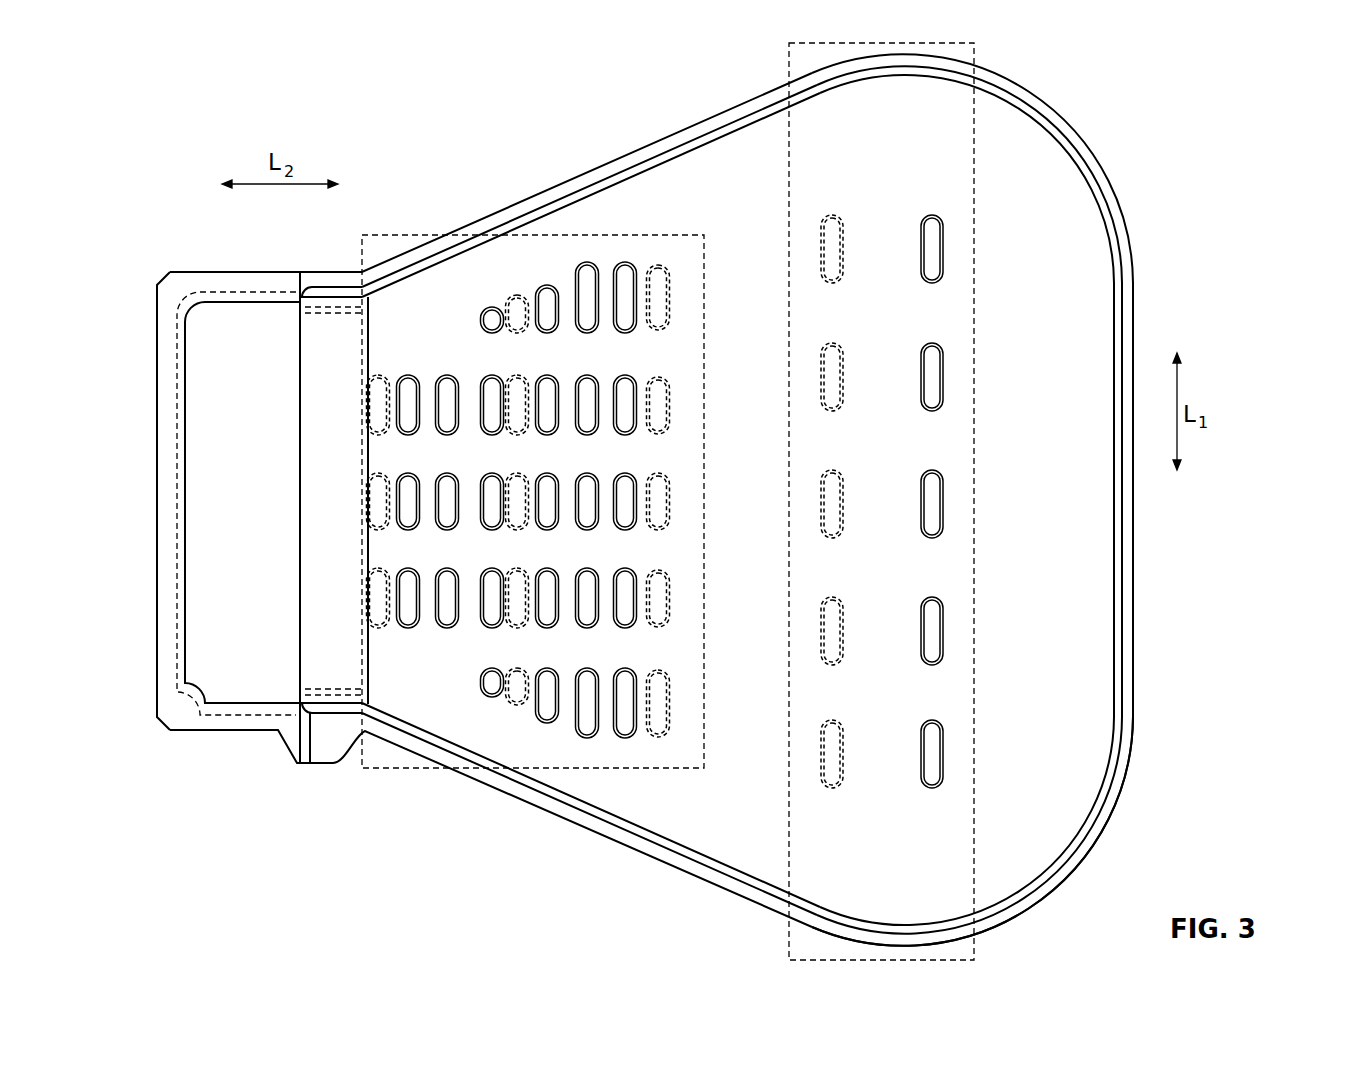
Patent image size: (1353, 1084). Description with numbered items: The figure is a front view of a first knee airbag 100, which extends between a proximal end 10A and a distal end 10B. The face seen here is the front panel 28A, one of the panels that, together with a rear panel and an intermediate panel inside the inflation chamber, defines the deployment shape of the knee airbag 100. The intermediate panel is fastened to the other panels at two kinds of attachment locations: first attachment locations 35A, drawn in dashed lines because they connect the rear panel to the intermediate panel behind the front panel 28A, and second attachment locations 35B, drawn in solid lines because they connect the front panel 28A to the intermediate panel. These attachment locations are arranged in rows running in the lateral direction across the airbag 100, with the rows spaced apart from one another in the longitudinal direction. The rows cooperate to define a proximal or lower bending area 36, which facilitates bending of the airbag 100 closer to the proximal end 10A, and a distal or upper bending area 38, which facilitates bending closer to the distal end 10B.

The knee airbag 100 is at (705, 501).
The proximal end 10A is at (153, 607).
The distal end 10B is at (1133, 545).
The front panel 28A is at (960, 906).
The first attachment locations 35A is at (655, 265).
The second attachment locations 35B is at (620, 262).
The proximal bending area 36 is at (535, 457).
The distal bending area 38 is at (975, 44).